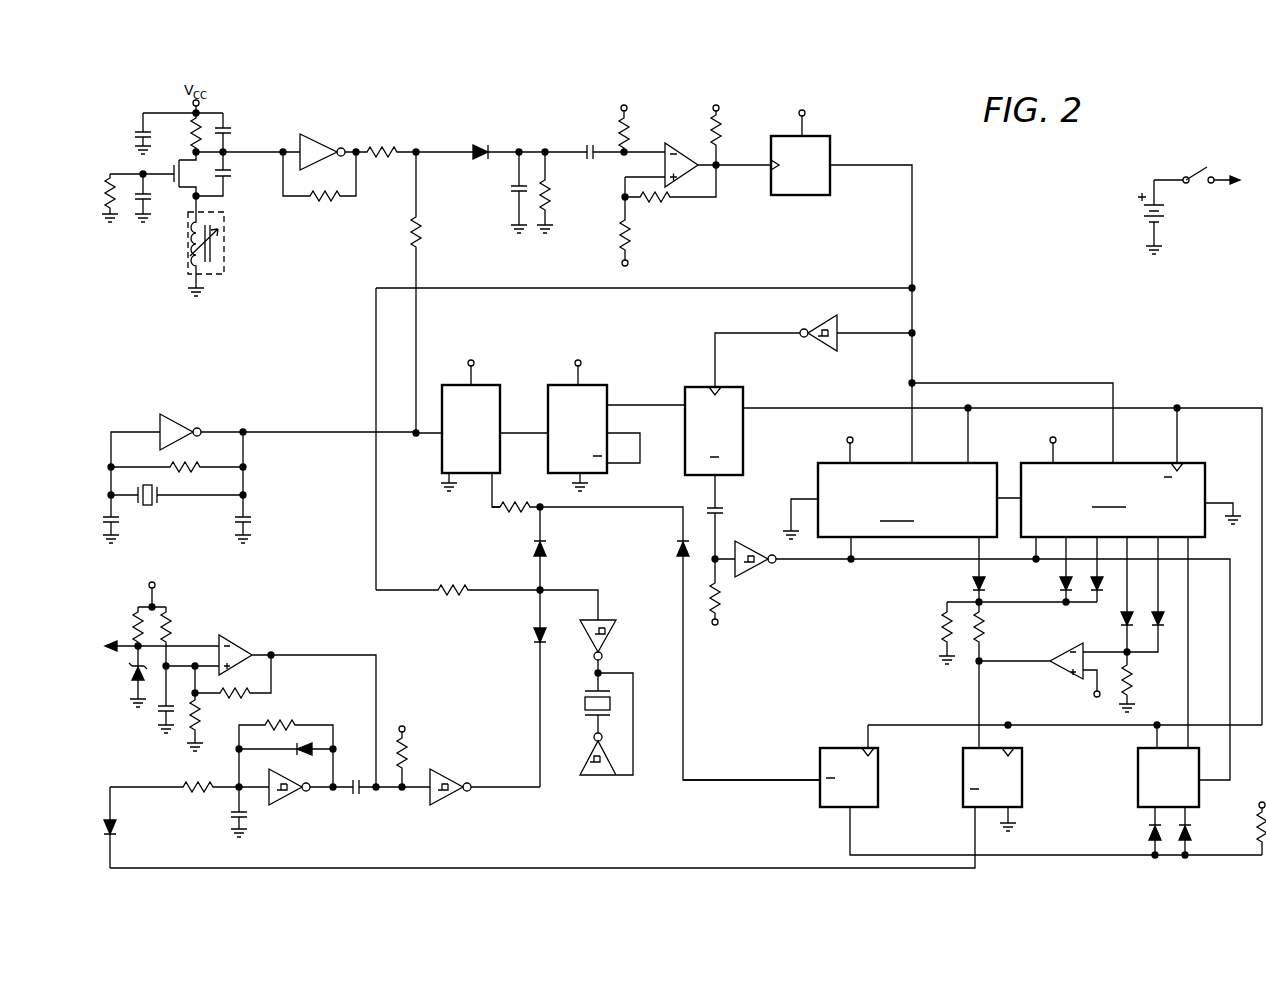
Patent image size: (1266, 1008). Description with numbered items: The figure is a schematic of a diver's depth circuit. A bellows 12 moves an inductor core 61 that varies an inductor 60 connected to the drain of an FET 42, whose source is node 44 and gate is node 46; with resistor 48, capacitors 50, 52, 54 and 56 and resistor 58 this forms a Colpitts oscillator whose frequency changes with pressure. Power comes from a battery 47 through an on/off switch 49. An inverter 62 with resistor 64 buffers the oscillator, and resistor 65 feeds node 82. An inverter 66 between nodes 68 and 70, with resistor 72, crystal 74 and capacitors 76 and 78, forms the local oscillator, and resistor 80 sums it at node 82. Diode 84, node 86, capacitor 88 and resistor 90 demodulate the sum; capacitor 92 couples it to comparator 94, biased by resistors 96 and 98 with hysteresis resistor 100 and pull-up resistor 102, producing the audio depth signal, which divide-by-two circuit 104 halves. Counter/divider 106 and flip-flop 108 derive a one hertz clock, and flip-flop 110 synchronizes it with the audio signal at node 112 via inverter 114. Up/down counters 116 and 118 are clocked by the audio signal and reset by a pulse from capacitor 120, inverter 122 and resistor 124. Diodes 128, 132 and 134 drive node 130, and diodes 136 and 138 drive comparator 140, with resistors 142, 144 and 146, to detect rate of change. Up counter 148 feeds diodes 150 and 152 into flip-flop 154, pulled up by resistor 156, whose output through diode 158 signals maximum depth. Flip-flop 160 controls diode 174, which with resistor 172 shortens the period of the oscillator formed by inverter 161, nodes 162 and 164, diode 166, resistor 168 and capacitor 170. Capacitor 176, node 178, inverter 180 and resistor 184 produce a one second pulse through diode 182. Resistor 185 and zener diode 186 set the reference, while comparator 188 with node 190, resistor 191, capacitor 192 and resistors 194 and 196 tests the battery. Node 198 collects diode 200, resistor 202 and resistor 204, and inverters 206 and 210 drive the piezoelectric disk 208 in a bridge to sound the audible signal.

The bellows 12 is at (224, 222).
The FET 42 is at (179, 174).
The node 44 is at (280, 150).
The node 46 is at (140, 172).
The battery 47 is at (1140, 218).
The resistor 48 is at (191, 132).
The on/off switch 49 is at (1188, 172).
The capacitor 50 is at (230, 128).
The capacitor 52 is at (231, 178).
The capacitor 54 is at (143, 130).
The capacitor 56 is at (147, 200).
The resistor 58 is at (108, 192).
The inductor 60 is at (190, 240).
The inductor core 61 is at (222, 258).
The inverter 62 is at (320, 142).
The resistor 64 is at (318, 200).
The resistor 65 is at (376, 148).
The inverter 66 is at (174, 416).
The node 68 is at (109, 467).
The node 70 is at (243, 432).
The resistor 72 is at (190, 466).
The crystal 74 is at (150, 506).
The capacitor 76 is at (108, 512).
The capacitor 78 is at (249, 516).
The resistor 80 is at (410, 232).
The node 82 is at (418, 148).
The diode 84 is at (478, 145).
The node 86 is at (519, 148).
The capacitor 88 is at (513, 200).
The resistor 90 is at (551, 200).
The capacitor 92 is at (586, 145).
The comparator 94 is at (684, 138).
The resistor 96 is at (630, 126).
The resistor 98 is at (618, 236).
The resistor 100 is at (688, 203).
The resistor 102 is at (725, 124).
The divide-by-2 circuit 104 is at (830, 136).
The 14-stage binary counter/divider 106 is at (490, 386).
The D-type flip-flop 108 is at (596, 386).
The D-type flip-flop 110 is at (722, 388).
The node 112 is at (914, 331).
The Schmidt trigger hex inverter 114 is at (818, 322).
The up/down counter 116 is at (893, 491).
The up/down counter 118 is at (1129, 576).
The capacitor 120 is at (723, 518).
The Schmidt trigger hex inverter 122 is at (762, 570).
The resistor 124 is at (722, 600).
The diode 128 is at (972, 583).
The node 130 is at (984, 604).
The diode 132 is at (1060, 584).
The diode 134 is at (1104, 588).
The diode 136 is at (1120, 622).
The diode 138 is at (1165, 626).
The comparator 140 is at (1058, 674).
The resistor 142 is at (943, 633).
The resistor 144 is at (986, 633).
The resistor 146 is at (1138, 684).
The up counter 148 is at (1138, 758).
The diode 150 is at (1148, 838).
The diode 152 is at (1192, 838).
The D-type flip-flop 154 is at (836, 746).
The resistor 156 is at (1257, 826).
The diode 158 is at (676, 551).
The D-type flip-flop 160 is at (1022, 770).
The inverter 161 is at (284, 804).
The node 162 is at (326, 792).
The node 164 is at (236, 792).
The diode 166 is at (294, 752).
The resistor 168 is at (280, 722).
The capacitor 170 is at (230, 830).
The resistor 172 is at (190, 783).
The diode 174 is at (116, 828).
The capacitor 176 is at (358, 794).
The node 178 is at (402, 792).
The inverter 180 is at (447, 780).
The diode 182 is at (532, 635).
The resistor 184 is at (408, 756).
The resistor 185 is at (134, 624).
The zener diode 186 is at (131, 672).
The comparator 188 is at (244, 644).
The node 190 is at (172, 654).
The resistor 191 is at (170, 626).
The capacitor 192 is at (158, 718).
The resistor 194 is at (202, 710).
The resistor 196 is at (235, 688).
The node 198 is at (544, 590).
The diode 200 is at (533, 552).
The resistor 202 is at (512, 512).
The resistor 204 is at (444, 586).
The inverter 206 is at (612, 622).
The piezoelectric disk 208 is at (580, 703).
The inverter 210 is at (584, 780).